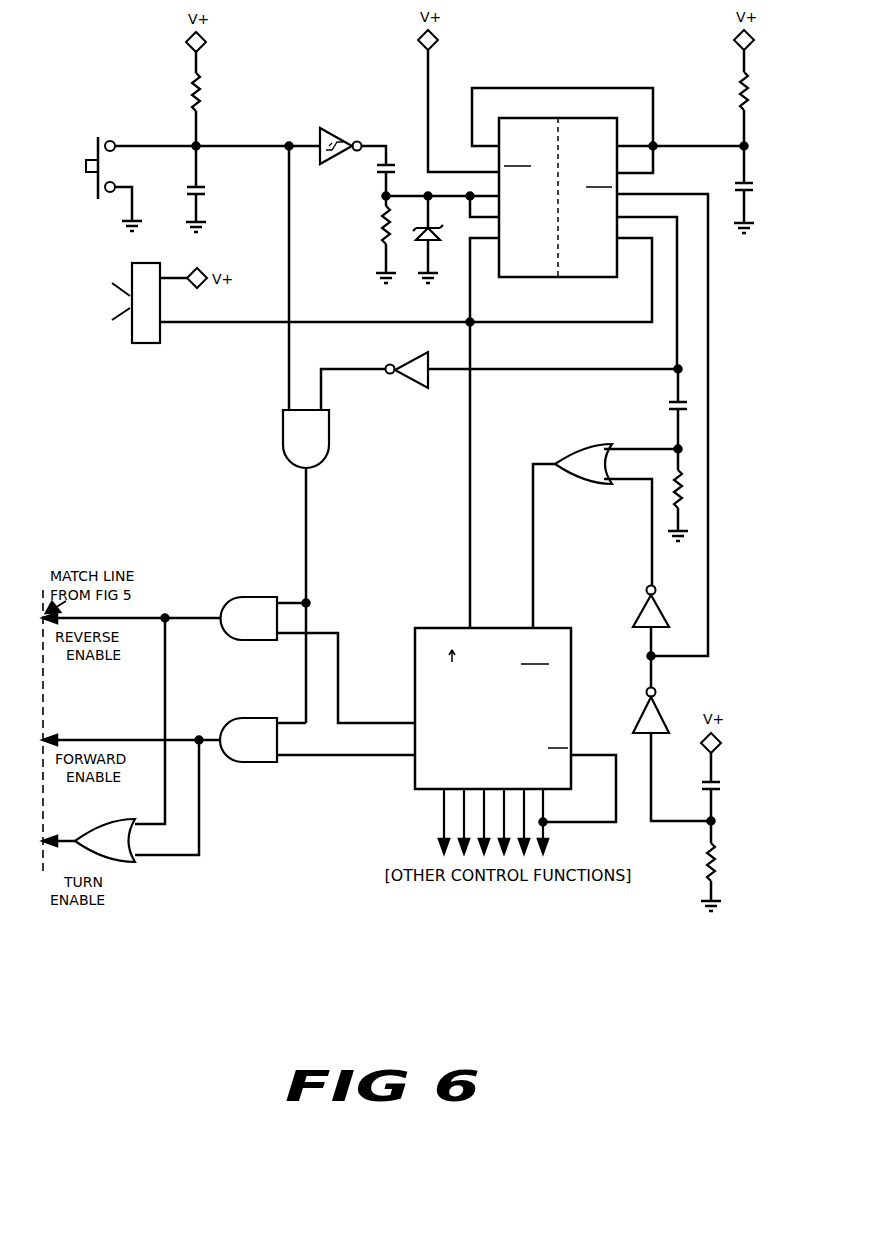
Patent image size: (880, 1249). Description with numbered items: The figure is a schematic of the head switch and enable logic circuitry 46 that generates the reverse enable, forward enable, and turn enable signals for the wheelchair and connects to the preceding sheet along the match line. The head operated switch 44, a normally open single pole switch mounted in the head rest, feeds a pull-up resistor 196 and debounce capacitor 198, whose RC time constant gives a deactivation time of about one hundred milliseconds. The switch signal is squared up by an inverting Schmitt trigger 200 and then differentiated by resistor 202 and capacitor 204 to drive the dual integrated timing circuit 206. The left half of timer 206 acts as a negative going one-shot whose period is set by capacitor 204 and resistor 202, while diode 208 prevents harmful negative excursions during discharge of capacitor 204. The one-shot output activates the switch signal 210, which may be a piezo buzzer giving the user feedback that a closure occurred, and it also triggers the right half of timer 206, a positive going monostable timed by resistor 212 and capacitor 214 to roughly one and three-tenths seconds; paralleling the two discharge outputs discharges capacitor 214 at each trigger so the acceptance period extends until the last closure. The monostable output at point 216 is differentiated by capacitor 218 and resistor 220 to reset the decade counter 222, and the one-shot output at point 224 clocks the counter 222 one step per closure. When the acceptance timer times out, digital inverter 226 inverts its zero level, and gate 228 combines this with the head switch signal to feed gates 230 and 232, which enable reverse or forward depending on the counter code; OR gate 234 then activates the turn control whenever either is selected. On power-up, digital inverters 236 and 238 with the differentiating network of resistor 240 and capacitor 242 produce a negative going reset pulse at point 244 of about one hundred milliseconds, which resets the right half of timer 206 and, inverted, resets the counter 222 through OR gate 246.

The head operated switch 44 is at (98, 150).
The enable logic circuitry 46 is at (127, 91).
The pull-up resistor 196 is at (212, 98).
The debounce capacitor 198 is at (204, 192).
The inverting Schmitt trigger 200 is at (328, 132).
The resistor 202 is at (382, 225).
The capacitor 204 is at (390, 165).
The integrated timing circuit 206 is at (550, 85).
The diode 208 is at (445, 224).
The switch signal 210 is at (130, 272).
The resistor 212 is at (738, 92).
The capacitor 214 is at (750, 184).
The point 216 is at (675, 368).
The capacitor 218 is at (667, 404).
The resistor 220 is at (672, 480).
The decade counter 222 is at (548, 628).
The point 224 is at (474, 320).
The digital inverter 226 is at (400, 360).
The gate 228 is at (328, 448).
The gate 230 is at (243, 598).
The gate 232 is at (243, 716).
The OR gate 234 is at (108, 820).
The digital inverter 236 is at (660, 705).
The digital inverter 238 is at (660, 612).
The resistor 240 is at (717, 872).
The capacitor 242 is at (722, 790).
The point 244 is at (648, 657).
The OR gate 246 is at (580, 446).